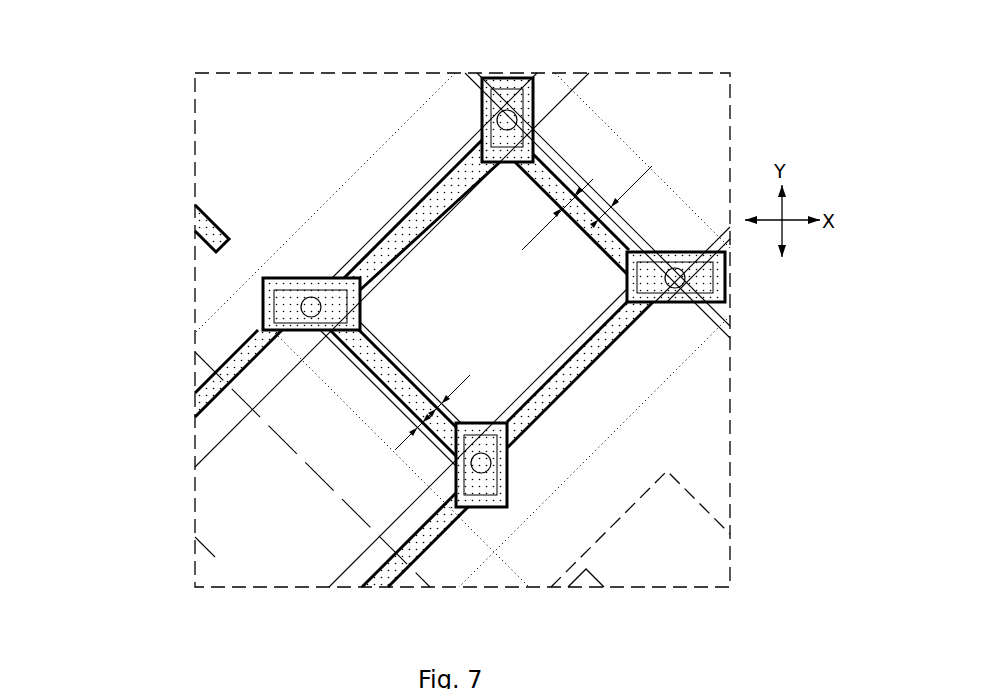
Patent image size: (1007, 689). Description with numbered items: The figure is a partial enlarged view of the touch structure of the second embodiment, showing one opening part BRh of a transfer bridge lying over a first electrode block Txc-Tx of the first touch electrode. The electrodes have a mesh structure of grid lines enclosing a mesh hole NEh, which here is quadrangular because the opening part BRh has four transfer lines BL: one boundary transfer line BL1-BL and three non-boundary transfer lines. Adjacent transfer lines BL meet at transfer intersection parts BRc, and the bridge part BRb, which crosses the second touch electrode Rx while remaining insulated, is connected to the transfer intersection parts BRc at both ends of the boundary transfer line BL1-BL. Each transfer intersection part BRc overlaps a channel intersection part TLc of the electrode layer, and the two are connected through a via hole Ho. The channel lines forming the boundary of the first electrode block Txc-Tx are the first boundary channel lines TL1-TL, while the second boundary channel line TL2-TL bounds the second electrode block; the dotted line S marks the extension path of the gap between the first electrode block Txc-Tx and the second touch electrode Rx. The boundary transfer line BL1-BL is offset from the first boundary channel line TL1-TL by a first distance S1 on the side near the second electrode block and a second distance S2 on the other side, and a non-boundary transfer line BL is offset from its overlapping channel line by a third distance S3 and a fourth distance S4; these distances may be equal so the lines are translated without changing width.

The mesh hole NEh is at (452, 245).
The opening part BRh is at (607, 124).
The bridge part BRb is at (262, 308).
The transfer intersection part BRc is at (495, 482).
The first boundary channel line TL1-TL is at (213, 222).
The second boundary channel line TL2-TL is at (205, 540).
The boundary transfer line BL1-BL is at (362, 363).
The transfer line BL is at (607, 257).
The channel intersection part TLc is at (500, 482).
The via hole Ho is at (483, 462).
The first electrode block Txc-Tx is at (737, 403).
The dotted line S is at (715, 510).
The second touch electrode Rx is at (655, 582).
The first distance S1 is at (407, 433).
The second distance S2 is at (449, 380).
The third distance S3 is at (621, 197).
The fourth distance S4 is at (553, 214).